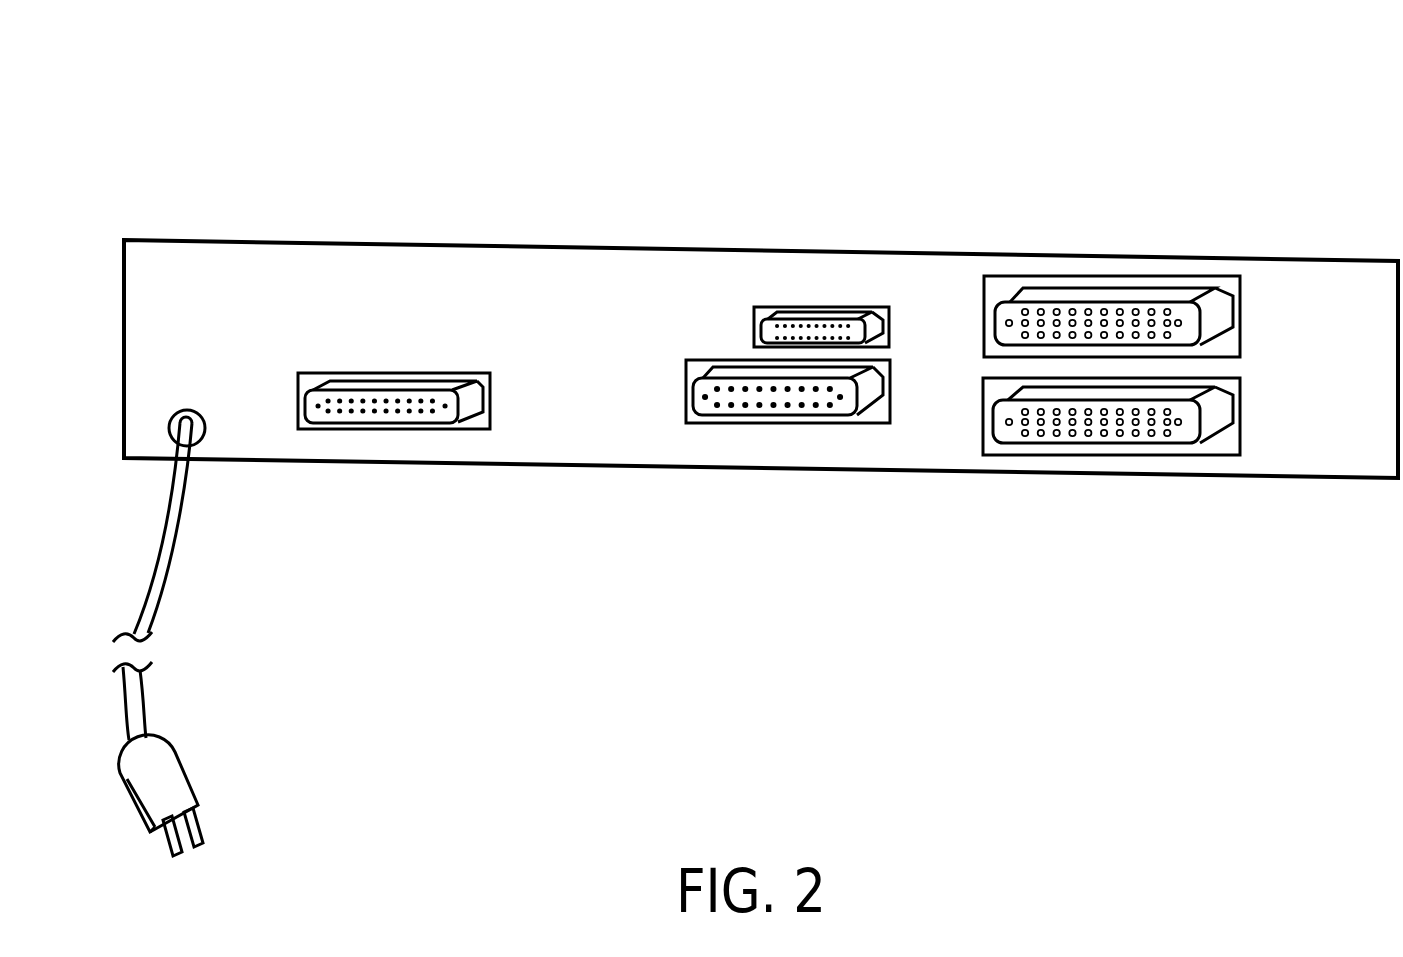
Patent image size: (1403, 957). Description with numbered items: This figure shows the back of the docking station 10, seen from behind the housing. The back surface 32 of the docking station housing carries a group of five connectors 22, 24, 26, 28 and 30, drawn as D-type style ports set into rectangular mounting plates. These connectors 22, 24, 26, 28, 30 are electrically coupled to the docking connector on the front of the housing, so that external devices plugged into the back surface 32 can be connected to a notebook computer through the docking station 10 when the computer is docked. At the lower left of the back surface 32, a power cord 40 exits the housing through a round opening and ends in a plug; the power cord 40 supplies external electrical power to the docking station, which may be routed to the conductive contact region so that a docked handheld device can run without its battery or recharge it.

The docking station 10 is at (1038, 90).
The connector 22 is at (483, 430).
The connector 24 is at (868, 425).
The connector 26 is at (1197, 455).
The connector 28 is at (1200, 282).
The connector 30 is at (822, 306).
The back surface 32 is at (357, 258).
The power cord 40 is at (182, 765).